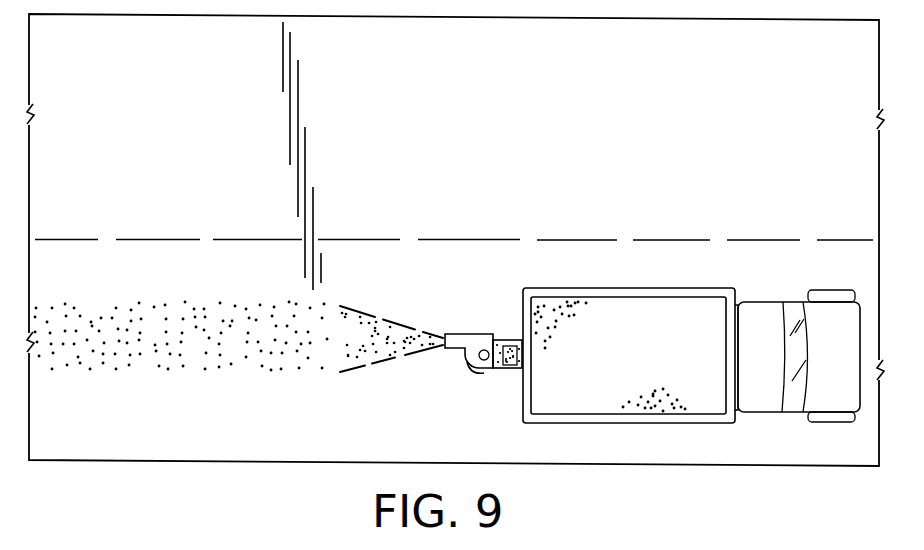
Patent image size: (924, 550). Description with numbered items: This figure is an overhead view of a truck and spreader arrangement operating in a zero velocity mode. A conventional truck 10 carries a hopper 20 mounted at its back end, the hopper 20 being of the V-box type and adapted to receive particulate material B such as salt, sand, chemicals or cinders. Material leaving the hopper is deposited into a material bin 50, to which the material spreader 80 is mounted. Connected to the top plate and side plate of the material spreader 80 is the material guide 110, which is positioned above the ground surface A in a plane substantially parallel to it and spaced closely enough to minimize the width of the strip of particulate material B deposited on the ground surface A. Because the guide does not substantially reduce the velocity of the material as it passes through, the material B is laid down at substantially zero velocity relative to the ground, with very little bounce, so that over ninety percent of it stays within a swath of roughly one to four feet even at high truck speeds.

The truck 10 is at (691, 307).
The hopper 20 is at (643, 288).
The material bin 50 is at (510, 372).
The material spreader 80 is at (473, 372).
The material guide 110 is at (461, 353).
The ground surface A is at (462, 273).
The particulate material B is at (223, 313).